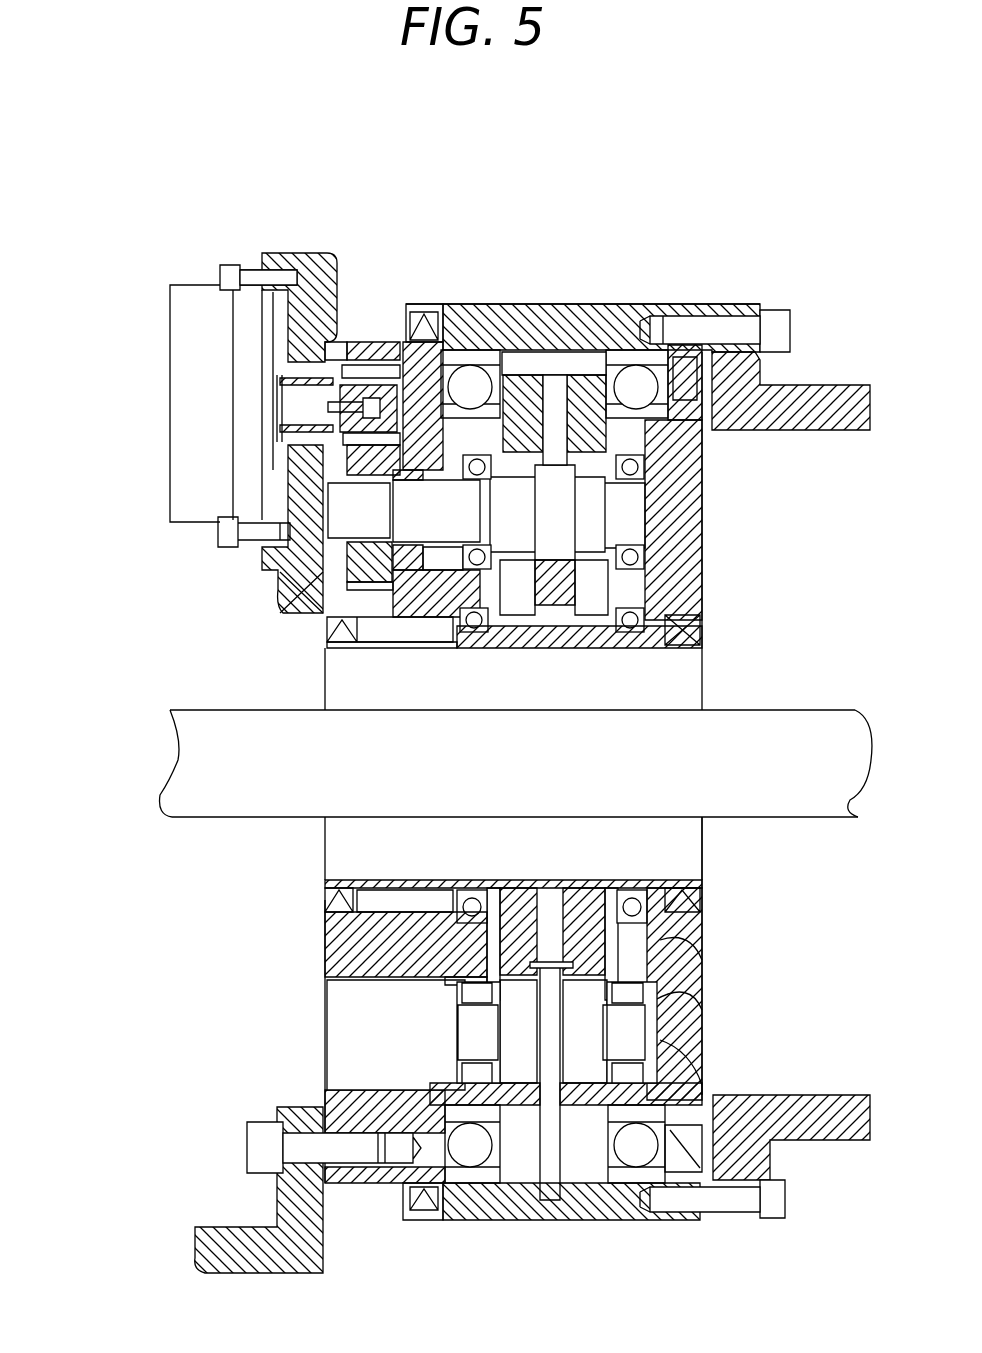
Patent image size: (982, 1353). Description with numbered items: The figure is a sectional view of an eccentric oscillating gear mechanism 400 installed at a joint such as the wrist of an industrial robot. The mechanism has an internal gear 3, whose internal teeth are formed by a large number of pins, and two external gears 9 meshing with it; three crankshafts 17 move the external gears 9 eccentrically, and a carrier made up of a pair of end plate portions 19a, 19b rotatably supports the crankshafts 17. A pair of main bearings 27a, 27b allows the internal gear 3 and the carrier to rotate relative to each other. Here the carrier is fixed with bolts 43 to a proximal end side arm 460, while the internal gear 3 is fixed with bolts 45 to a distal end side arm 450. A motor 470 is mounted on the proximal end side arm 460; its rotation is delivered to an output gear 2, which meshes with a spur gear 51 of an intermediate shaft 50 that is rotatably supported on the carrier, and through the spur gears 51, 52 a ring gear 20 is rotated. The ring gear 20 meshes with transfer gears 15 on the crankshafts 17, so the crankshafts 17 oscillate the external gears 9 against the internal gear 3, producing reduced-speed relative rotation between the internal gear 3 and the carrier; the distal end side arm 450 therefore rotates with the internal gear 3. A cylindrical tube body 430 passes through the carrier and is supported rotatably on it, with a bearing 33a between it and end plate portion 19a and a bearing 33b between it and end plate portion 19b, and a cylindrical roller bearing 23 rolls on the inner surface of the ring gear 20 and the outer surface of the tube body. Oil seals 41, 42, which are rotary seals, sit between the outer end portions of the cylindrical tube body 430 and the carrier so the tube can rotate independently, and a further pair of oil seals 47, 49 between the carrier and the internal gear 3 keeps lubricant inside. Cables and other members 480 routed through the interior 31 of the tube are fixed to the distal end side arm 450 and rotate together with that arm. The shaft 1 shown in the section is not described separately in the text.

The rotating shaft 1 is at (572, 360).
The output gear 2 is at (367, 372).
The internal gear 3 is at (527, 335).
The external gears 9 is at (565, 1168).
The transfer gears 15 is at (650, 1070).
The crankshafts 17 is at (680, 1026).
The end plate portion 19a is at (690, 481).
The end plate portion 19b is at (328, 932).
The ring gear 20 is at (640, 610).
The cylindrical roller bearing 23 is at (680, 960).
The main bearing 27a is at (636, 375).
The main bearing 27b is at (465, 375).
The interior 31 is at (695, 849).
The bearing 33a is at (660, 648).
The bearing 33b is at (327, 958).
The oil seal 41 is at (327, 889).
The oil seal 42 is at (700, 633).
The bolts 43 is at (250, 1147).
The bolts 45 is at (775, 305).
The oil seal 47 is at (420, 1212).
The oil seal 49 is at (686, 1195).
The intermediate shaft 50 is at (345, 505).
The spur gear 51 is at (350, 588).
The spur gear 52 is at (660, 540).
The eccentric oscillating gear mechanism 400 is at (690, 246).
The cylindrical tube body 430 is at (680, 890).
The distal end side arm 450 is at (847, 395).
The proximal end side arm 460 is at (305, 258).
The motor 470 is at (172, 377).
The cables and other members 480 is at (190, 757).